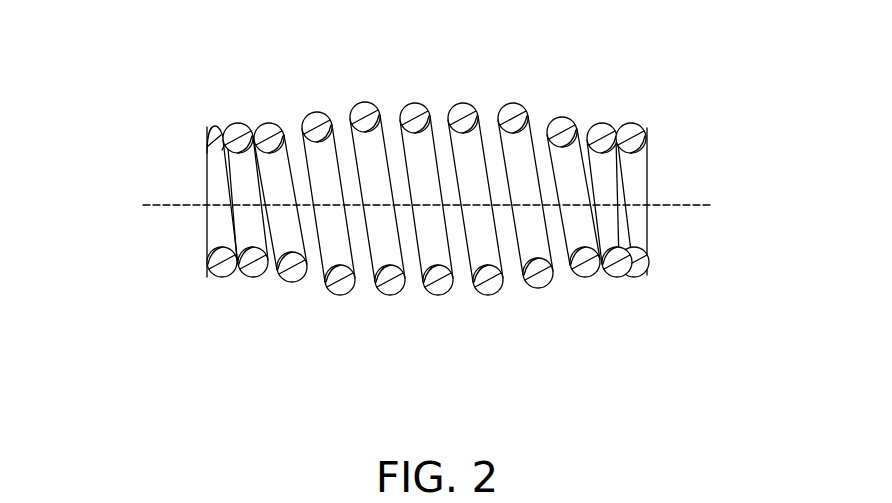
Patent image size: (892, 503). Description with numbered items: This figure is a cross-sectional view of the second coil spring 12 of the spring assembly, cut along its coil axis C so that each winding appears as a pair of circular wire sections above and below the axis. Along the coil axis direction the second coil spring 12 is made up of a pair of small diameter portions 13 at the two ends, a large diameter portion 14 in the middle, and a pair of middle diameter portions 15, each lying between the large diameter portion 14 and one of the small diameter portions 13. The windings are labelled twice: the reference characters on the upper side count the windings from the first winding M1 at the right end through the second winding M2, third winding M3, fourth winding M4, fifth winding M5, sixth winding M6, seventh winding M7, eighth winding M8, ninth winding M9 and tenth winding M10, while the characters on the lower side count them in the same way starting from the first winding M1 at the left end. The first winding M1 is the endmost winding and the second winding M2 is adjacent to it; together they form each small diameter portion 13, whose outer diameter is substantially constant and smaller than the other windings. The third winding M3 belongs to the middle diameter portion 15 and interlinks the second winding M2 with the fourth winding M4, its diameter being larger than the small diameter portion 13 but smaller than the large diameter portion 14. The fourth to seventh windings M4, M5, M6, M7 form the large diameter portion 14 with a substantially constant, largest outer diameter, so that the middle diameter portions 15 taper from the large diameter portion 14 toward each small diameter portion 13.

The second coil spring 12 is at (196, 136).
The small diameter portion 13 is at (200, 52).
The large diameter portion 14 is at (350, 52).
The middle diameter portion 15 is at (297, 52).
The first winding M1 is at (428, 204).
The second winding M2 is at (426, 204).
The third winding M3 is at (429, 204).
The fourth winding M4 is at (428, 204).
The fifth winding M5 is at (427, 204).
The sixth winding M6 is at (426, 204).
The seventh winding M7 is at (427, 204).
The eighth winding M8 is at (428, 204).
The ninth winding M9 is at (427, 204).
The tenth winding M10 is at (429, 204).
The coil axis C is at (426, 208).